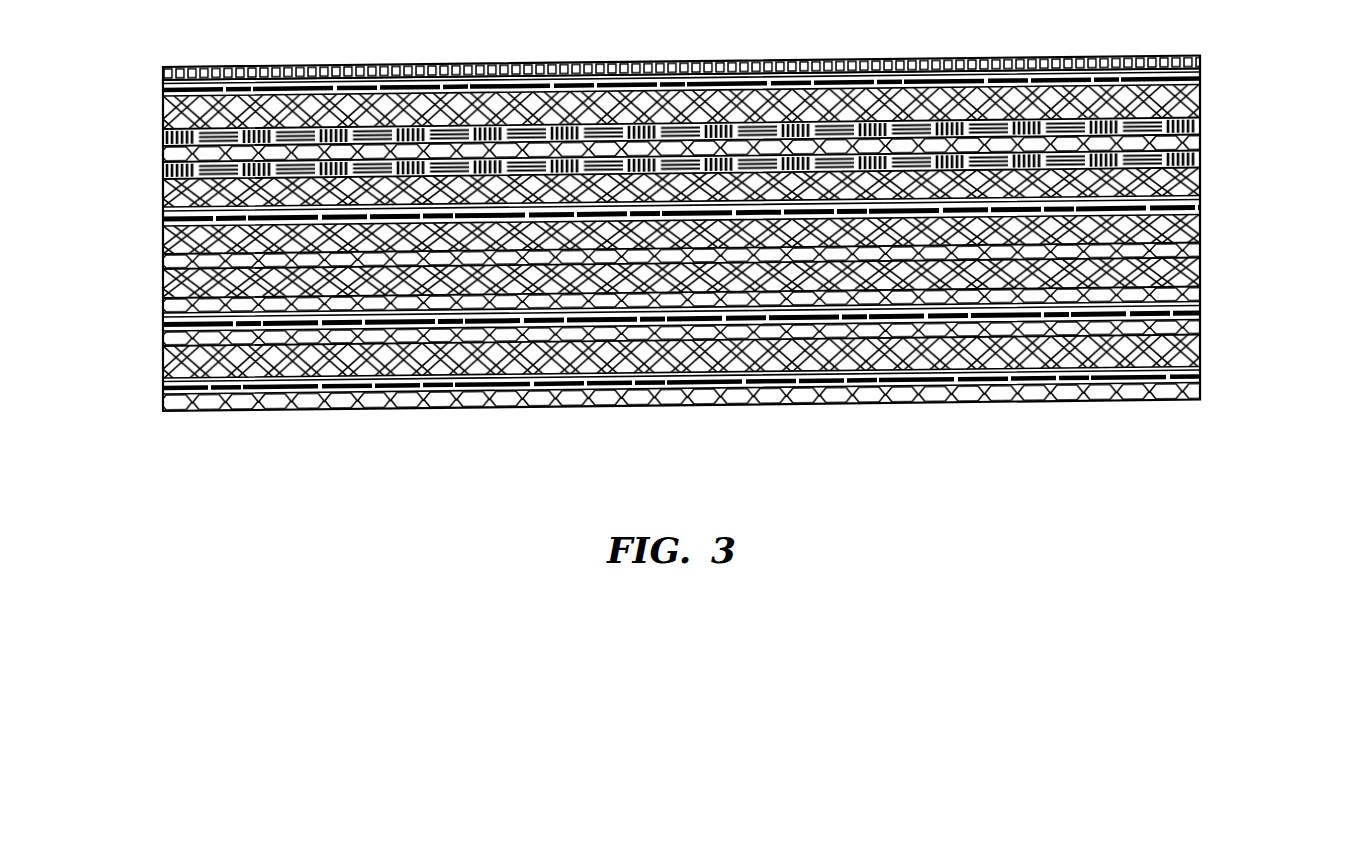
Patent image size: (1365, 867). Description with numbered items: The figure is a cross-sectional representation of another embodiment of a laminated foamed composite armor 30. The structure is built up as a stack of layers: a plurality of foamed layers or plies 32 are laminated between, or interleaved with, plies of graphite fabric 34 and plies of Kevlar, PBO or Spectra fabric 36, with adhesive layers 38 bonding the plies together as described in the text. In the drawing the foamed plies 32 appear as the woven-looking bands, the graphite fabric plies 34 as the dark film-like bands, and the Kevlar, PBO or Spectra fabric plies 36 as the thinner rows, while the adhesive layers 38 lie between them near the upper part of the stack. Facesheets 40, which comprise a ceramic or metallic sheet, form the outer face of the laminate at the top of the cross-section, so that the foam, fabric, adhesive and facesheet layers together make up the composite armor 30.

The multilayer laminate 30 is at (1247, 225).
The foamed layers or plies 32 is at (162, 113).
The plies of graphite fabric 34 is at (162, 215).
The Kevlar, PBO or Spectra fabric plies 36 is at (175, 410).
The adhesive layers 38 is at (162, 173).
The facesheets 40 is at (163, 68).